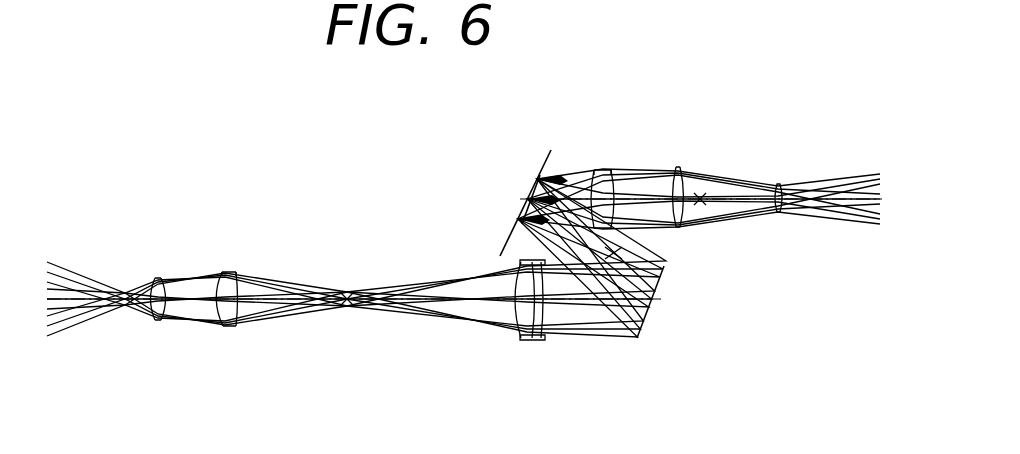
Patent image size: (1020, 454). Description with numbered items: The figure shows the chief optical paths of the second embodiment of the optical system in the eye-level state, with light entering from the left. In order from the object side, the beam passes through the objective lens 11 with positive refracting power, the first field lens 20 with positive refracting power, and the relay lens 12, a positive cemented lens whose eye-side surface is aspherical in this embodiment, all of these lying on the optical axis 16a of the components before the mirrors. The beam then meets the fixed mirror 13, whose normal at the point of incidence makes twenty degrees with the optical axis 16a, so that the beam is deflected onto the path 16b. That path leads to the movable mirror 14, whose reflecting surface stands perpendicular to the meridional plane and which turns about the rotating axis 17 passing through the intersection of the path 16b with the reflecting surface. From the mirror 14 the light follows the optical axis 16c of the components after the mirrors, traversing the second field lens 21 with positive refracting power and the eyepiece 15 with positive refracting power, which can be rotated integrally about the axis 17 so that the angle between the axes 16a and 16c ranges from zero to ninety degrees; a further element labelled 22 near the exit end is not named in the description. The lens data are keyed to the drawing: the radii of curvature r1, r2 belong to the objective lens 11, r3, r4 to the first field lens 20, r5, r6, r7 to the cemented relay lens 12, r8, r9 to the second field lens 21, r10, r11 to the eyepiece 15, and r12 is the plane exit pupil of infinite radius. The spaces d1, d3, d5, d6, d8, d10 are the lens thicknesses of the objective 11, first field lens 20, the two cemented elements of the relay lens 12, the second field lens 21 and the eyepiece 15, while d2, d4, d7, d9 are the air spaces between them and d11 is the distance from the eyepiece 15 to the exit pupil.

The objective lens 11 is at (153, 259).
The first field lens 20 is at (233, 262).
The relay lens 12 is at (497, 316).
The fixed mirror 13 is at (641, 331).
The movable mirror 14 is at (544, 162).
The rotating axis 17 is at (527, 200).
The second field lens 21 is at (595, 163).
The eyepiece 15 is at (681, 163).
The sixth lens 22 is at (801, 155).
The optical axis of components before the mirrors 16a is at (318, 302).
The optical axis deflected by the fixed mirror 16b is at (613, 252).
The optical axis of components after the mirrors 16c is at (700, 200).
The radius of curvature of the first lens surface r1 is at (152, 288).
The radius of curvature of the second lens surface r2 is at (166, 288).
The radius of curvature of the third lens surface r3 is at (218, 282).
The radius of curvature of the fourth lens surface r4 is at (237, 283).
The radius of curvature of the fifth lens surface r5 is at (515, 282).
The radius of curvature of the sixth lens surface r6 is at (533, 282).
The radius of curvature of the seventh lens surface r7 is at (541, 266).
The radius of curvature of the eighth lens surface r8 is at (597, 174).
The radius of curvature of the ninth lens surface r9 is at (602, 126).
The radius of curvature of the tenth lens surface r10 is at (676, 176).
The radius of curvature of the eleventh lens surface r11 is at (677, 126).
The radius of curvature of the twelfth surface r12 is at (779, 196).
The space between first and second surfaces d1 is at (157, 321).
The space between second and third surfaces d2 is at (188, 305).
The space between third and fourth surfaces d3 is at (226, 327).
The space between fourth and fifth surfaces d4 is at (347, 303).
The space between fifth and sixth surfaces d5 is at (519, 325).
The space between sixth and seventh surfaces d6 is at (539, 320).
The space between seventh and eighth surfaces d7 is at (568, 307).
The space between eighth and ninth surfaces d8 is at (618, 205).
The space between ninth and tenth surfaces d9 is at (672, 205).
The space between tenth and eleventh surfaces d10 is at (705, 203).
The space between eleventh and twelfth surfaces d11 is at (755, 203).